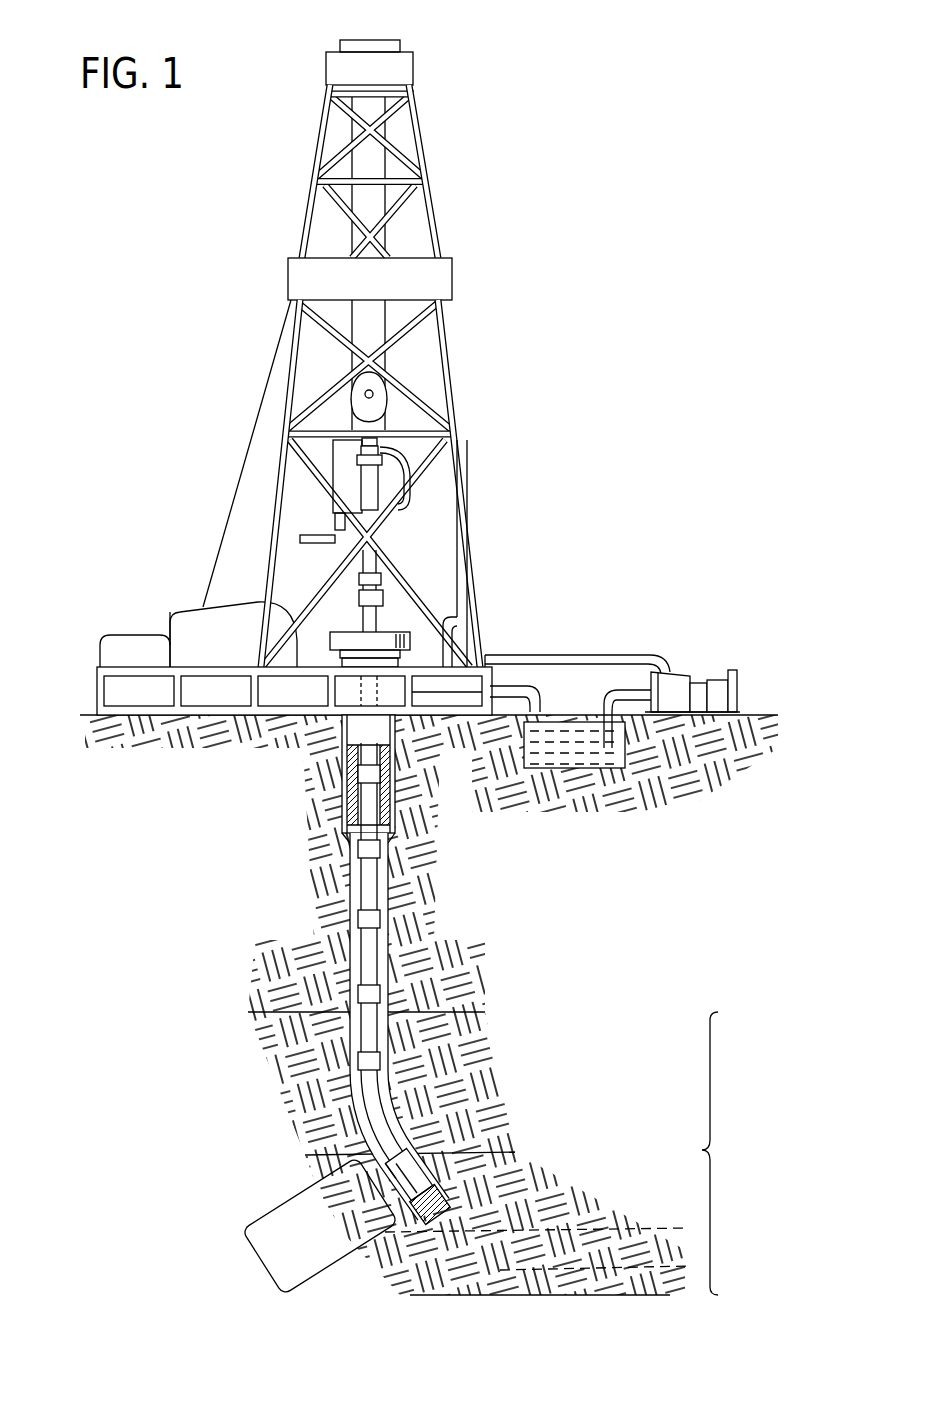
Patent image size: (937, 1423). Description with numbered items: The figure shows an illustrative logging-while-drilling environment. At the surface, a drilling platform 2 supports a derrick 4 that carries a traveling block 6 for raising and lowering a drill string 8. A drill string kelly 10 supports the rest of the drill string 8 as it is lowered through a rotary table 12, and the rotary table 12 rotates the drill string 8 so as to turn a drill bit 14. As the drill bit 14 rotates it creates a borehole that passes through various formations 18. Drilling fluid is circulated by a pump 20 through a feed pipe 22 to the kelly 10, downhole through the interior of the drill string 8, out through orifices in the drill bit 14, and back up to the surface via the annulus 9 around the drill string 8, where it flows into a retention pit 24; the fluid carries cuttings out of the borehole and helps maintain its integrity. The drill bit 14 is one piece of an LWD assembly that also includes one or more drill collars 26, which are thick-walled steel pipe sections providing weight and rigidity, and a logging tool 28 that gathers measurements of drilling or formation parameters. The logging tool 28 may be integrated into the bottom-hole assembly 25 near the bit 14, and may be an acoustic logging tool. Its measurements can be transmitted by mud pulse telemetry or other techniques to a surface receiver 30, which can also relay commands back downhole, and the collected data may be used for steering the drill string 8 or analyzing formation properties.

The drilling platform 2 is at (97, 685).
The derrick 4 is at (432, 215).
The traveling block 6 is at (377, 394).
The drill string 8 is at (380, 875).
The annulus 9 is at (357, 887).
The drill string kelly 10 is at (370, 485).
The rotary table 12 is at (387, 630).
The drill bit 14 is at (450, 1215).
The formations 18 is at (712, 1150).
The pump 20 is at (670, 680).
The feed pipe 22 is at (585, 655).
The retention pit 24 is at (545, 755).
The bottom-hole assembly 25 is at (243, 1275).
The drill collars 26 is at (405, 1205).
The logging tool 28 is at (383, 1168).
The surface receiver 30 is at (388, 583).